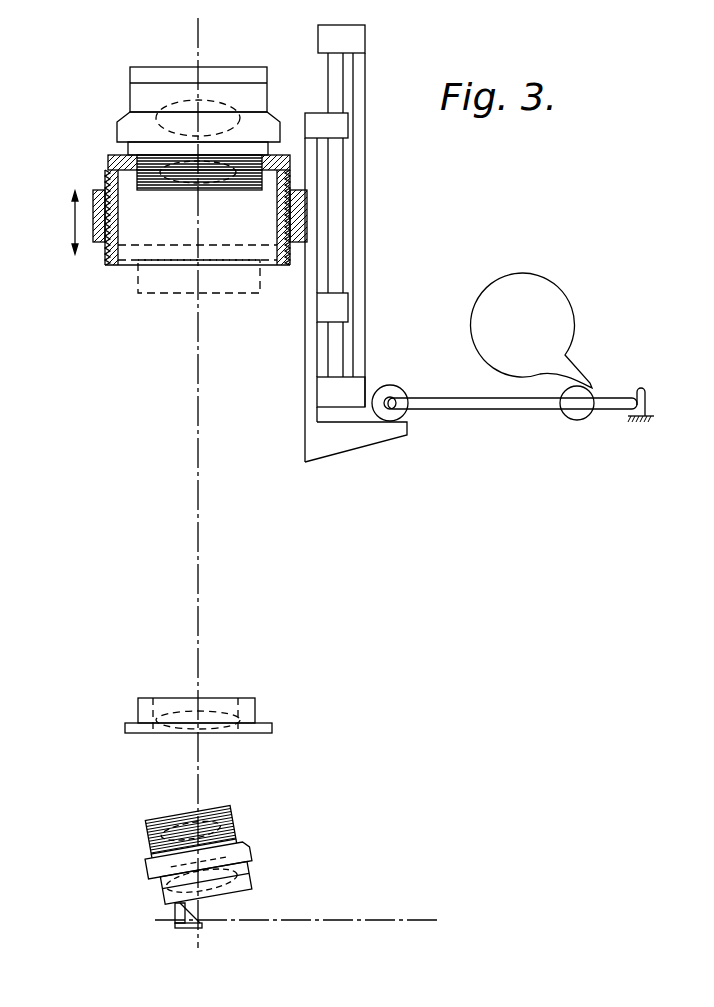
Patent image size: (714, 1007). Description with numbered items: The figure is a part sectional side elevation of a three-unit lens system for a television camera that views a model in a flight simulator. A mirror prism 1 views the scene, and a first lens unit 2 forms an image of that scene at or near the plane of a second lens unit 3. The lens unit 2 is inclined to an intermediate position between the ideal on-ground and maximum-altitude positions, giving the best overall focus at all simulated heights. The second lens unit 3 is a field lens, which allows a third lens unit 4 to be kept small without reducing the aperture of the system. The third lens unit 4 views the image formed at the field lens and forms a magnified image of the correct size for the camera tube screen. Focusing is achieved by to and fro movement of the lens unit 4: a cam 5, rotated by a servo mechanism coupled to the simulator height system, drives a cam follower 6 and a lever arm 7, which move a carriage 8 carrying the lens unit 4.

The mirror prism 1 is at (178, 928).
The first lens unit 2 is at (236, 812).
The second lens unit 3 is at (254, 704).
The third lens unit 4 is at (110, 266).
The cam 5 is at (566, 296).
The cam follower 6 is at (583, 422).
The lever arm 7 is at (502, 406).
The carriage 8 is at (372, 443).